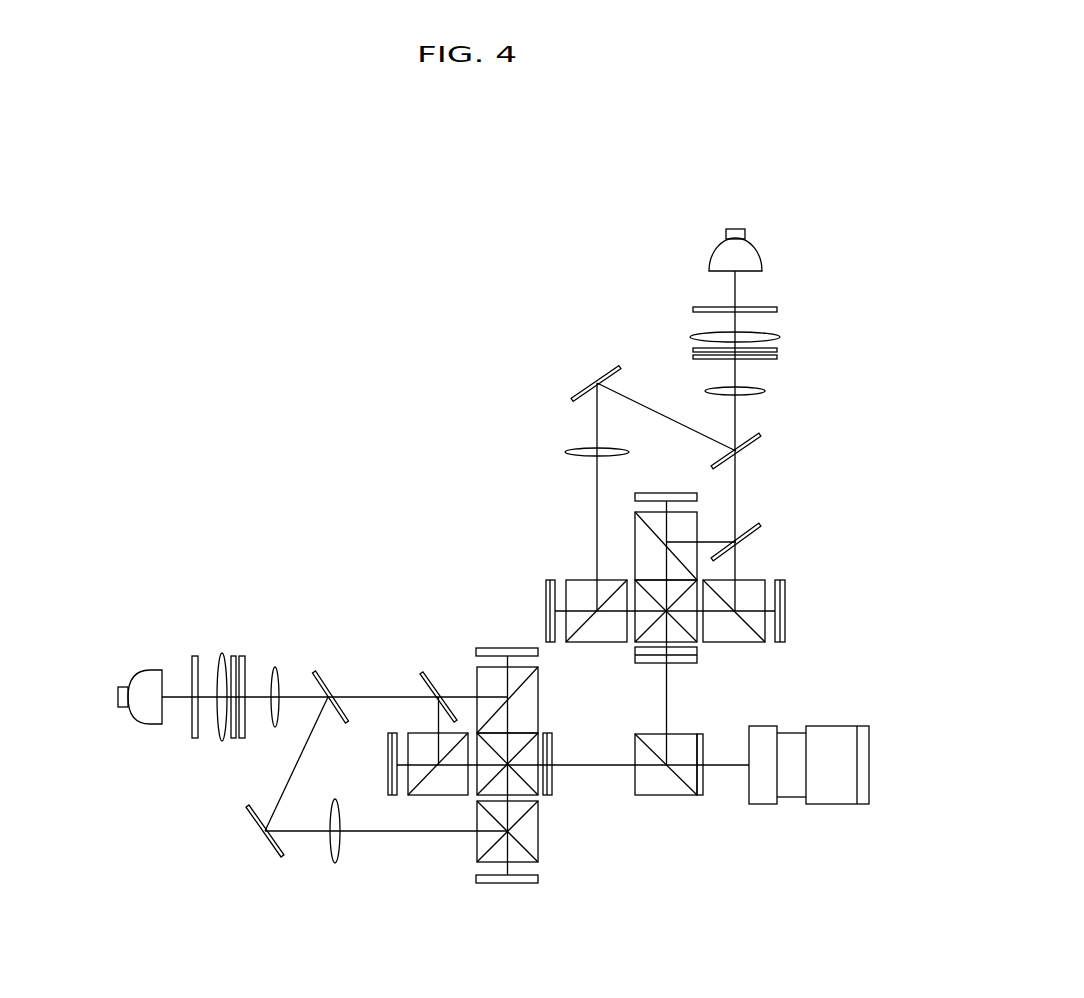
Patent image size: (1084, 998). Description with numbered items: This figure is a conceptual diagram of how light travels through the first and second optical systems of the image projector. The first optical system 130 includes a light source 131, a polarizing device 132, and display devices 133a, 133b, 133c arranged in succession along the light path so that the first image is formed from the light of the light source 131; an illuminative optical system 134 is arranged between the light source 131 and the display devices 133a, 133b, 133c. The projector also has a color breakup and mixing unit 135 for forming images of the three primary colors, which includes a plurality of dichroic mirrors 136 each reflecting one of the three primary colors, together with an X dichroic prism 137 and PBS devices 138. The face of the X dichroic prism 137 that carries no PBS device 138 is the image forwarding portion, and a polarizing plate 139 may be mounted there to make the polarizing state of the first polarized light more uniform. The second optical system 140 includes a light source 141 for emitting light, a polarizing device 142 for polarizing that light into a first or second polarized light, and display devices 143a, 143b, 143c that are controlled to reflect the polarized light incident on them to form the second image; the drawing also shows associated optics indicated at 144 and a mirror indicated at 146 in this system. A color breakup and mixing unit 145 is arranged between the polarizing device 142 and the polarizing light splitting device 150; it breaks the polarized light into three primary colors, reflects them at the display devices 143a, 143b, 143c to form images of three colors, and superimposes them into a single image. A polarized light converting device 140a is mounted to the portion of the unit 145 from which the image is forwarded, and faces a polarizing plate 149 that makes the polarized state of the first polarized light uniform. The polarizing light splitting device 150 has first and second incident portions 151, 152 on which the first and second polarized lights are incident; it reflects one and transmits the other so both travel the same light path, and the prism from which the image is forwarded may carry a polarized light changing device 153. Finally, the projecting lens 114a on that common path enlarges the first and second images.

The first optical system 130 is at (186, 538).
The light source 131 is at (148, 680).
The polarizing device 132 is at (233, 652).
The illuminative optical system 134 is at (218, 772).
The dichroic mirror 136 is at (322, 668).
The display device 133a is at (490, 647).
The display device 133b is at (388, 775).
The display device 133c is at (523, 884).
The color breakup and mixing unit 135 is at (445, 862).
The X dichroic prism 137 is at (530, 777).
The PBS device 138 is at (478, 672).
The polarizing plate 139 is at (552, 745).
The second optical system 140 is at (524, 355).
The polarized light converting device 140a is at (637, 658).
The light source 141 is at (762, 258).
The polarizing device 142 is at (777, 351).
The display device 143a is at (786, 611).
The display device 143b is at (660, 490).
The display device 143c is at (550, 578).
The illumination optical system 144 is at (792, 378).
The color breakup and mixing unit 145 is at (768, 505).
The mirror 146 is at (760, 436).
The polarizing plate 149 is at (690, 655).
The polarizing light splitting device 150 is at (677, 828).
The first incident portion 151 is at (645, 800).
The second incident portion 152 is at (676, 740).
The polarized light changing device 153 is at (697, 797).
The projecting lens 114a is at (830, 800).